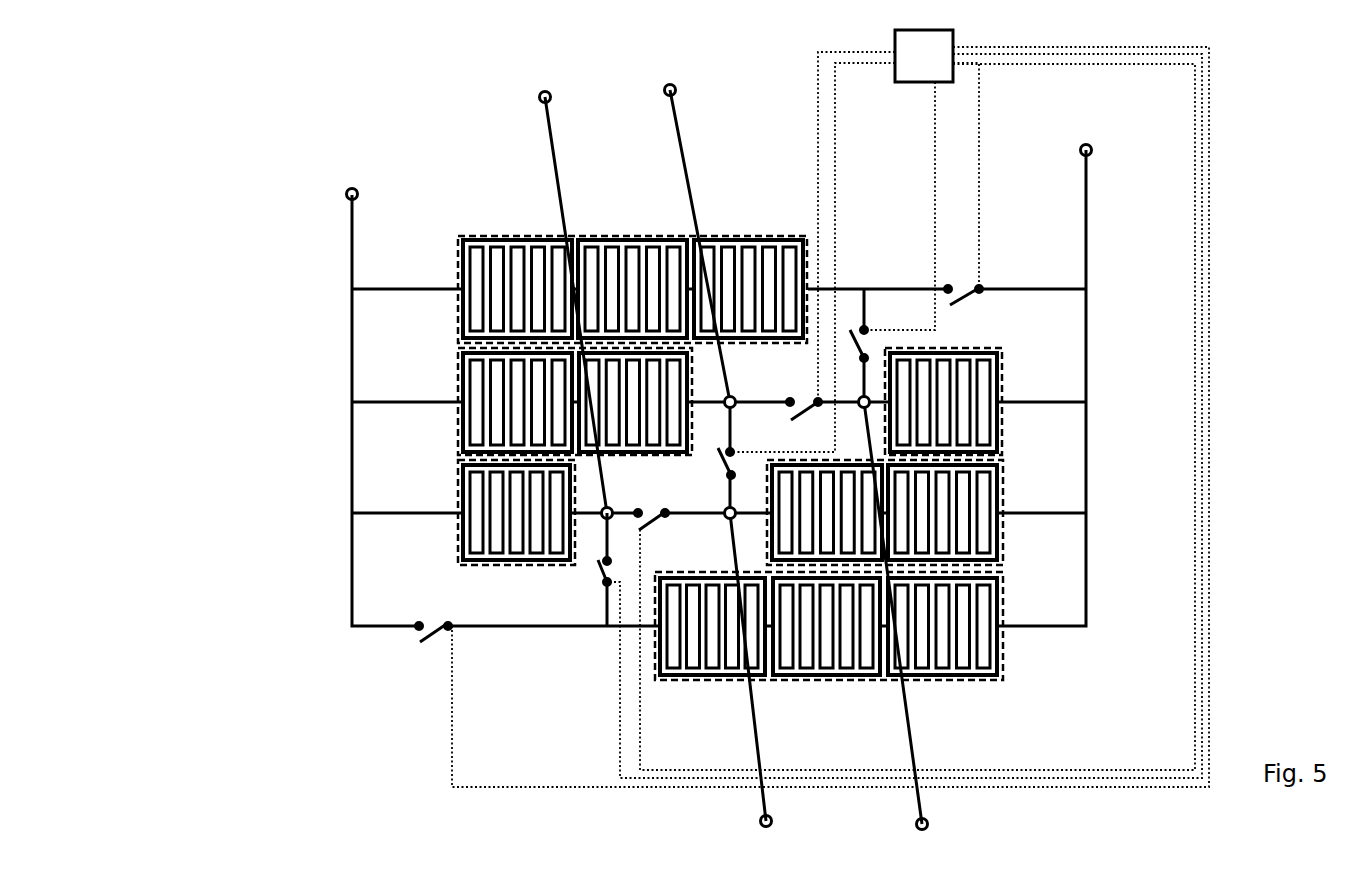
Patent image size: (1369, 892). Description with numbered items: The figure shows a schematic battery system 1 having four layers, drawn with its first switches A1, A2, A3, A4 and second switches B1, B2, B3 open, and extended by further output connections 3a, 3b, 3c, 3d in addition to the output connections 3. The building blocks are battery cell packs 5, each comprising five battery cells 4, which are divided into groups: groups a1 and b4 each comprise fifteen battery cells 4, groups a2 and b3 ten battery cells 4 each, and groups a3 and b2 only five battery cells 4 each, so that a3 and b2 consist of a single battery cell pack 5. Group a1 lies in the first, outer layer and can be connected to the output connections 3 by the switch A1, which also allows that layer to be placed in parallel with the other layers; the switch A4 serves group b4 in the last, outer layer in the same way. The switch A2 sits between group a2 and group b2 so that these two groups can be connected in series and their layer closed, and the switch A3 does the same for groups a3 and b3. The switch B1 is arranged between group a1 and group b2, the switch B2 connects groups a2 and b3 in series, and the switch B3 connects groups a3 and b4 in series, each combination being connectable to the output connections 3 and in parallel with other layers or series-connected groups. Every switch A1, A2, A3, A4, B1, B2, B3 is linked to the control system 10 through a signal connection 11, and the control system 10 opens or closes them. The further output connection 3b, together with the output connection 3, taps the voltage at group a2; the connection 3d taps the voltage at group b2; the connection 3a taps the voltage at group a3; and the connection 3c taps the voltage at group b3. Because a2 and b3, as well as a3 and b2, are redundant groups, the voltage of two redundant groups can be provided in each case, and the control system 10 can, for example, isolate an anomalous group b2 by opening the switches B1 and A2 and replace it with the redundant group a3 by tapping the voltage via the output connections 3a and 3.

The battery system 1 is at (237, 158).
The output connections 3 is at (349, 189).
The further output connection 3a is at (540, 96).
The further output connection 3b is at (665, 89).
The further output connection 3c is at (760, 821).
The further output connection 3d is at (916, 825).
The battery cells 4 is at (475, 253).
The battery cell packs 5 is at (715, 238).
The control system 10 is at (924, 56).
The signal connection 11 is at (980, 143).
The group a1 is at (773, 238).
The group a2 is at (458, 370).
The group a3 is at (458, 548).
The group b2 is at (1003, 395).
The group b3 is at (1003, 553).
The group b4 is at (937, 680).
The first switch A1 is at (967, 307).
The first switch A2 is at (806, 421).
The first switch A3 is at (642, 527).
The first switch A4 is at (424, 649).
The second switch B1 is at (853, 348).
The second switch B2 is at (715, 458).
The second switch B3 is at (592, 569).